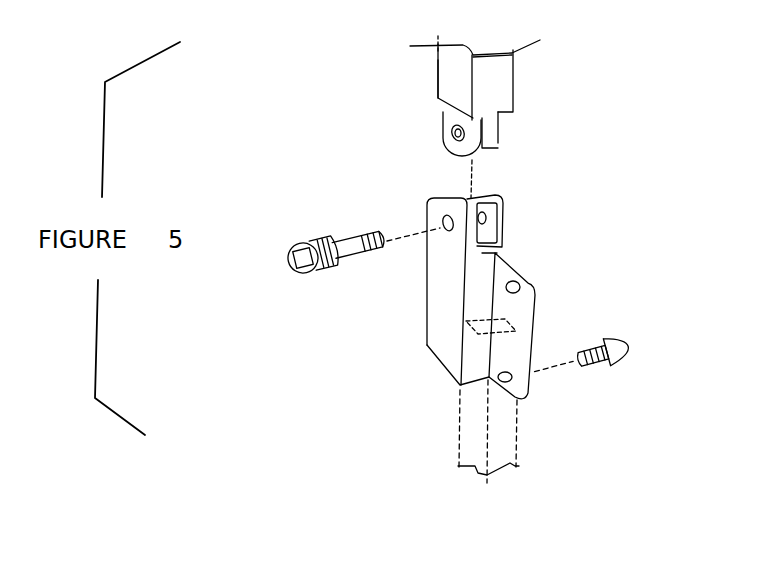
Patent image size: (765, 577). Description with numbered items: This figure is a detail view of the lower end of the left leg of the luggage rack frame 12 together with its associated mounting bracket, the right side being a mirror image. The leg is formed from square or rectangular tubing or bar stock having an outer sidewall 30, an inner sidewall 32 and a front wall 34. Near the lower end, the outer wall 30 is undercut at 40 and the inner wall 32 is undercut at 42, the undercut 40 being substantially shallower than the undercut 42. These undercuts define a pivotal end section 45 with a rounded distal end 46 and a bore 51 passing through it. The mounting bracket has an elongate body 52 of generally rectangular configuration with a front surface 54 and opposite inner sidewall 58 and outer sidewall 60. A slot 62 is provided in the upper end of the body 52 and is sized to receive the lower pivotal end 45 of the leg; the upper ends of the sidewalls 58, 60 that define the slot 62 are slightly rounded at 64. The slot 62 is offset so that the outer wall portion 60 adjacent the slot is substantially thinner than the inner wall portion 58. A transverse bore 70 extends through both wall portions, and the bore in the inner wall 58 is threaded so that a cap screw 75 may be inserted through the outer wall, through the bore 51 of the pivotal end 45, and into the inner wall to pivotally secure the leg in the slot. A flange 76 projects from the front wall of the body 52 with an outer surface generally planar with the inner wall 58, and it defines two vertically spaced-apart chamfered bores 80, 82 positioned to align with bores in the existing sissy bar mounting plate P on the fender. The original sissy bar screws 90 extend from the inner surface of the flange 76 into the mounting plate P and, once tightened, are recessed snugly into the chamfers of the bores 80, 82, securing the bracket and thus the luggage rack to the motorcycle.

The frame 12 is at (447, 57).
The outer sidewall 30 is at (438, 88).
The inner sidewall 32 is at (513, 65).
The front wall 34 is at (500, 84).
The undercut 40 is at (443, 113).
The undercut 42 is at (500, 115).
The pivotal end section 45 is at (498, 143).
The rounded distal end 46 is at (445, 155).
The bore 51 is at (452, 133).
The elongate body 52 is at (435, 339).
The front surface 54 is at (507, 243).
The inner sidewall 58 is at (505, 222).
The outer sidewall 60 is at (428, 287).
The slot 62 is at (495, 205).
The rounded upper ends 64 is at (440, 199).
The transverse bore 70 is at (432, 235).
The cap screw 75 is at (292, 242).
The flange 76 is at (520, 313).
The bore 80 is at (528, 282).
The bore 82 is at (513, 383).
The screws 90 is at (613, 333).
The mounting plate P is at (507, 443).